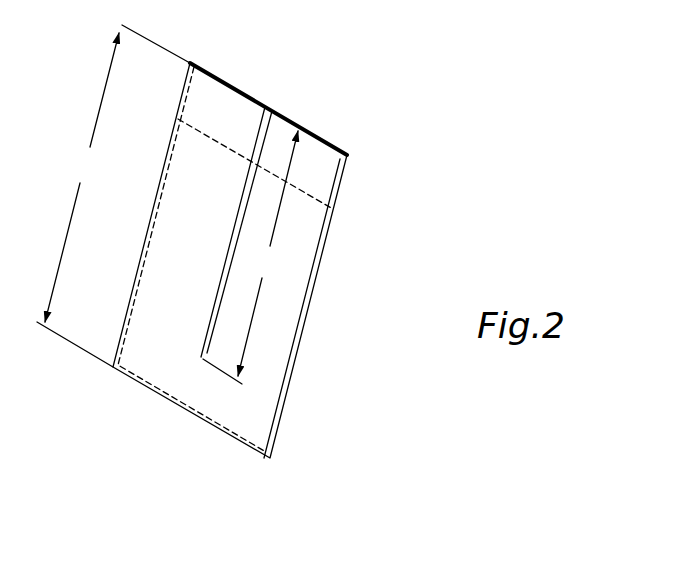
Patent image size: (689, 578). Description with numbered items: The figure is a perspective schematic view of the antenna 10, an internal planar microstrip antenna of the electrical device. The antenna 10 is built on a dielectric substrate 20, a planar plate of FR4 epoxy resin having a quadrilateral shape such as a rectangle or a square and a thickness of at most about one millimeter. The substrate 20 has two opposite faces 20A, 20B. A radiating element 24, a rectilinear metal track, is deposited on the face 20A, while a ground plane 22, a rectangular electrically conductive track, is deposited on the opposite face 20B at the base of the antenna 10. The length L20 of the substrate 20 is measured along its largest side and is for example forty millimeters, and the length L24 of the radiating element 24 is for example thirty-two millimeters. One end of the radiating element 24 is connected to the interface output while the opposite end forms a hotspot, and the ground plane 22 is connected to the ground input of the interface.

The antenna 10 is at (354, 76).
The dielectric substrate 20 is at (270, 460).
The face of the substrate 20A is at (270, 376).
The face of the substrate 20B is at (298, 406).
The ground plane 22 is at (200, 92).
The radiating element 24 is at (266, 121).
The length of the substrate L20 is at (82, 177).
The length of the radiating element L24 is at (268, 253).